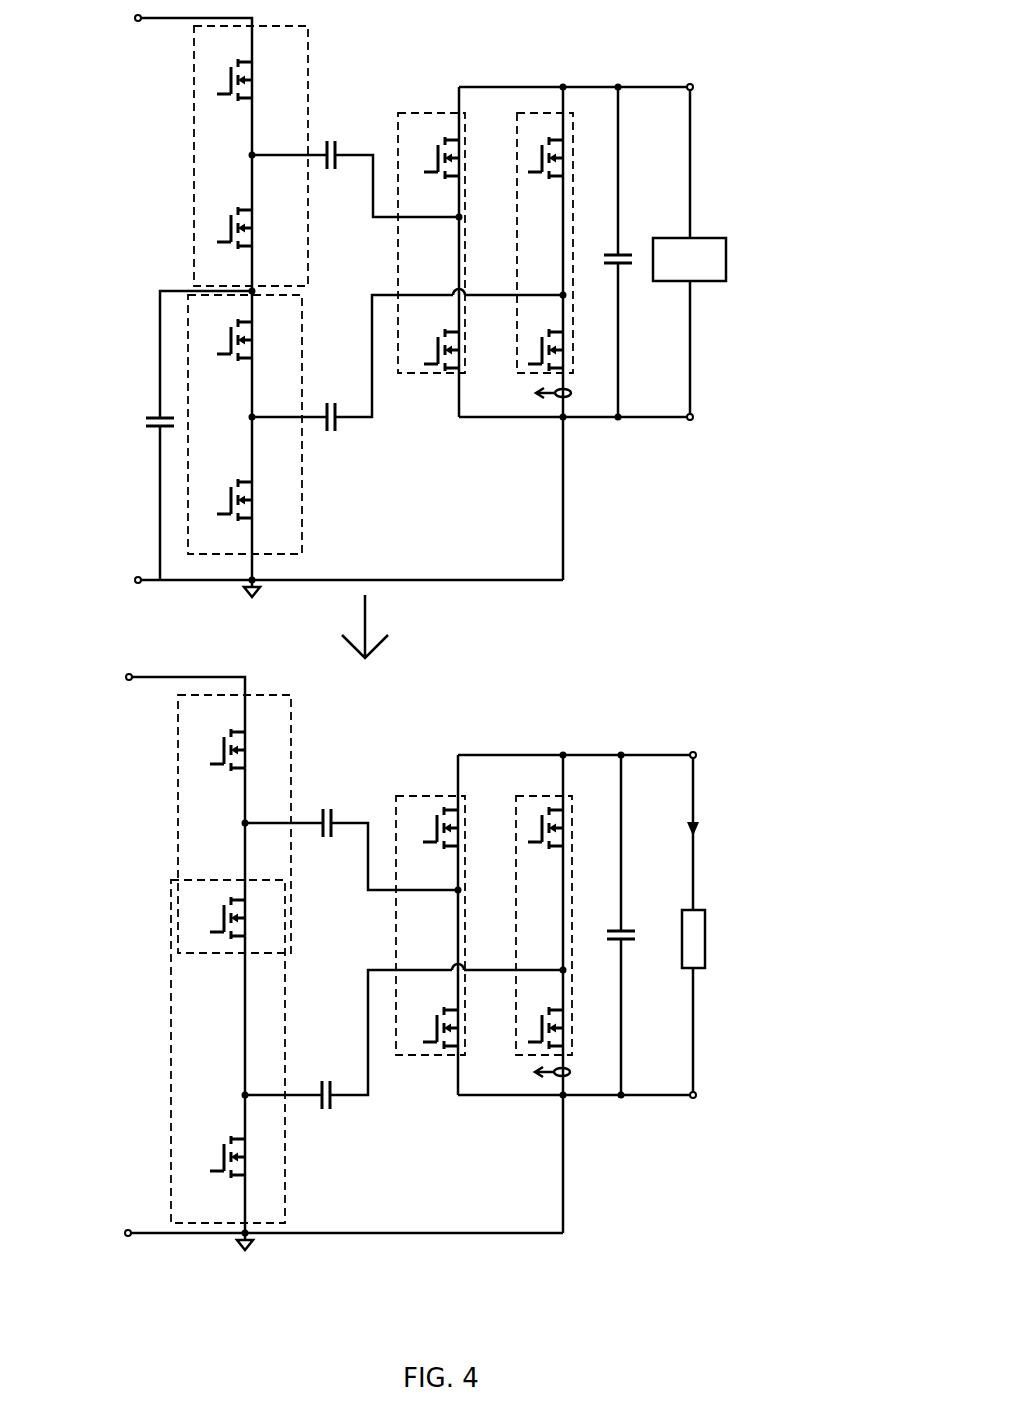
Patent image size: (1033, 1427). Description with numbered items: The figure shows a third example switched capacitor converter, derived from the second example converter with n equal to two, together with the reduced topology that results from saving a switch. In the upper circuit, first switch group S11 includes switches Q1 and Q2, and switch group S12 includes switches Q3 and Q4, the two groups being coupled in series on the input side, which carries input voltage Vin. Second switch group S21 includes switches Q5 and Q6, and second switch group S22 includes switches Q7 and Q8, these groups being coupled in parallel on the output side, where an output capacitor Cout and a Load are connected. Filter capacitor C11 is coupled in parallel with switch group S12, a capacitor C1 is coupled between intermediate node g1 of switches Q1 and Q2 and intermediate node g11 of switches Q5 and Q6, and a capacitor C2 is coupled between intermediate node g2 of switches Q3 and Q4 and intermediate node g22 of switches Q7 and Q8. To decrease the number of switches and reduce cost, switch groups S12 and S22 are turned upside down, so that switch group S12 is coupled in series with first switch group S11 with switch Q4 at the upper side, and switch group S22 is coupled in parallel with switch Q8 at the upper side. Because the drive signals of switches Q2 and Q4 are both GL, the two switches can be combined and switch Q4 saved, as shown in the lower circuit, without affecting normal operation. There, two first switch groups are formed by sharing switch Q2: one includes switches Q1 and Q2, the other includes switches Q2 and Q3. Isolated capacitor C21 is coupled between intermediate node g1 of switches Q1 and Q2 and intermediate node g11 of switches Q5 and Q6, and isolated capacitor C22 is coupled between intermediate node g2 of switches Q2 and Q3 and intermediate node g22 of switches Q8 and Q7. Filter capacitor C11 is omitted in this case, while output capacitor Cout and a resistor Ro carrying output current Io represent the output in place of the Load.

The first switch group S11 is at (194, 82).
The switch group S12 is at (302, 541).
The second switch group S21 is at (398, 113).
The second switch group S22 is at (545, 113).
The switch Q1 is at (246, 415).
The switch Q2 is at (246, 573).
The switch Q3 is at (238, 748).
The switch Q4 is at (249, 500).
The switch Q5 is at (455, 493).
The switch Q6 is at (455, 689).
The switch Q7 is at (561, 593).
The switch Q8 is at (561, 589).
The first capacitor C1 is at (332, 145).
The second capacitor C2 is at (330, 408).
The filter capacitor C11 is at (143, 437).
The isolated capacitor C21 is at (332, 814).
The isolated capacitor C22 is at (332, 1085).
The output capacitor Cout is at (622, 265).
The load Load is at (689, 259).
The output resistor Ro is at (711, 944).
The output current Io is at (703, 831).
The intermediate node g1 is at (229, 489).
The intermediate node g2 is at (229, 752).
The intermediate node g11 is at (440, 568).
The intermediate node g22 is at (545, 620).
The input voltage Vin is at (115, 600).